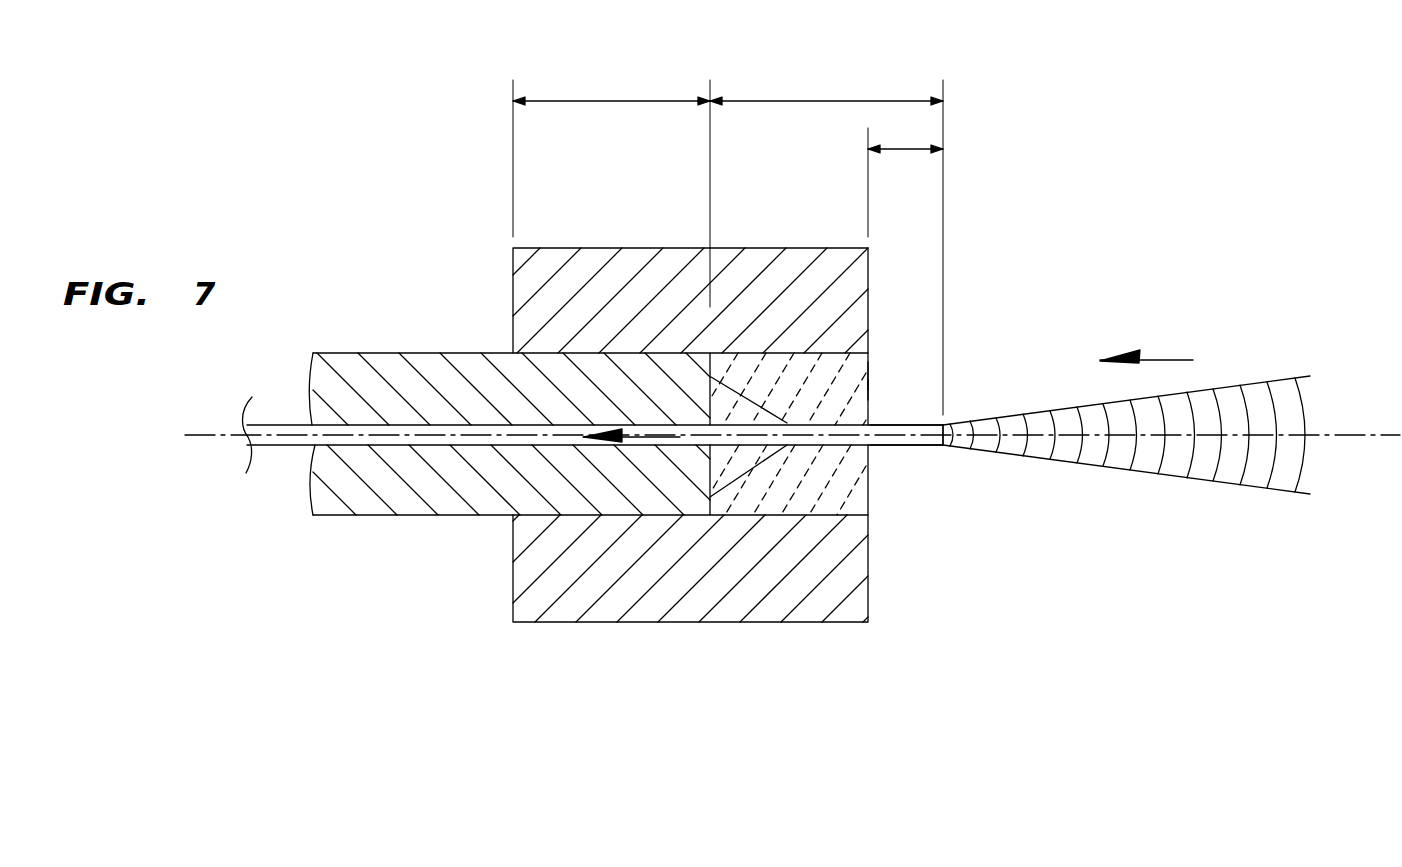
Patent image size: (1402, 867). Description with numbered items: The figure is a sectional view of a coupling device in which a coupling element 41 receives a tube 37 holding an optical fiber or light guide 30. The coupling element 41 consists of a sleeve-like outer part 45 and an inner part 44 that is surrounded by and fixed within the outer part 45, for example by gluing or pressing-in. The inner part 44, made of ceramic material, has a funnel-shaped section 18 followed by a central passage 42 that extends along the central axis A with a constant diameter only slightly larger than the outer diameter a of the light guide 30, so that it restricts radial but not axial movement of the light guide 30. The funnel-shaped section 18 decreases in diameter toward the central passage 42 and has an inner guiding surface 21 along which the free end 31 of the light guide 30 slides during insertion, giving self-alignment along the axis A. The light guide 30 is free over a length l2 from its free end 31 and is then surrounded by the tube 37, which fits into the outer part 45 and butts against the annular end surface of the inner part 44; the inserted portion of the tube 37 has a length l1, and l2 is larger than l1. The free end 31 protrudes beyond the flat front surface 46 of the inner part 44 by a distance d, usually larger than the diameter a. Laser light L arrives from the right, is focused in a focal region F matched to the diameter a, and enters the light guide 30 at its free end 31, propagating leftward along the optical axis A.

The funnel-shaped section 18 is at (760, 478).
The inner guiding surface 21 is at (711, 378).
The light guide 30 is at (910, 427).
The free end 31 is at (950, 440).
The tube 37 is at (468, 488).
The coupling element 41 is at (495, 651).
The central passage 42 is at (826, 353).
The inner part 44 is at (870, 364).
The outer part 45 is at (618, 590).
The front surface 46 is at (873, 390).
The central axis A is at (210, 436).
The laser light L is at (1175, 407).
The focal region F is at (963, 437).
The outer diameter a is at (790, 448).
The distance d is at (908, 150).
The length l1 is at (611, 177).
The length l2 is at (826, 230).